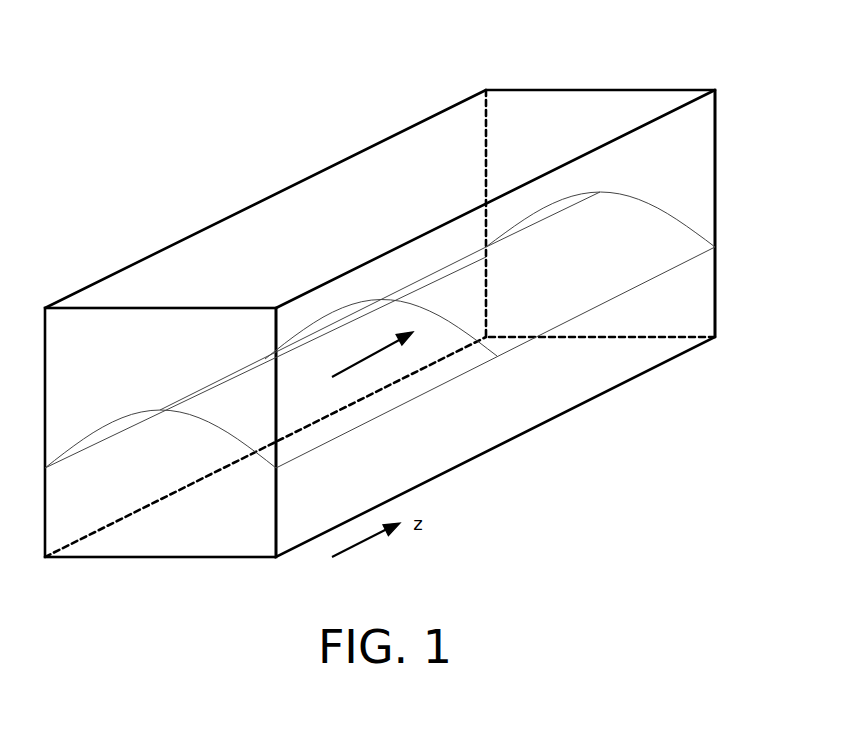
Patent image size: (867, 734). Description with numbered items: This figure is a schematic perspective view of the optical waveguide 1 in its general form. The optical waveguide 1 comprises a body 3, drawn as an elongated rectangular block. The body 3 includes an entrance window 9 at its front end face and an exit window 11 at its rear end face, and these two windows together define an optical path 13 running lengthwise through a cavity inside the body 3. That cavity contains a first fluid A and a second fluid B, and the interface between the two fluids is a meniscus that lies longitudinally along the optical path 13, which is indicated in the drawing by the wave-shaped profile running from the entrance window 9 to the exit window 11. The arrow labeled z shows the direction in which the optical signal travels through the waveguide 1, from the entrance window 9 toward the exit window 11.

The optical waveguide 1 is at (147, 152).
The body 3 is at (588, 390).
The entrance window 9 is at (158, 541).
The exit window 11 is at (647, 97).
The optical path 13 is at (357, 363).